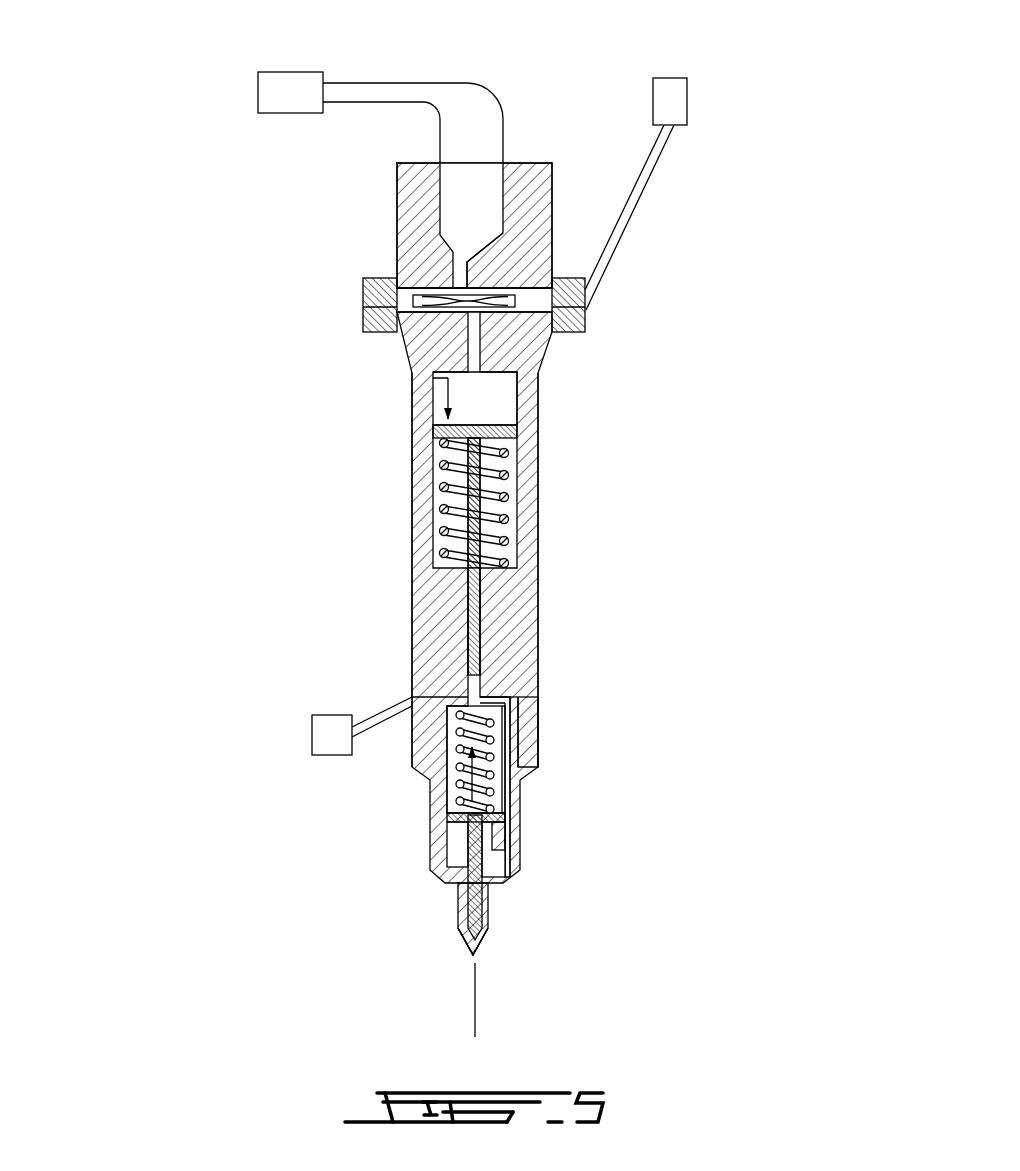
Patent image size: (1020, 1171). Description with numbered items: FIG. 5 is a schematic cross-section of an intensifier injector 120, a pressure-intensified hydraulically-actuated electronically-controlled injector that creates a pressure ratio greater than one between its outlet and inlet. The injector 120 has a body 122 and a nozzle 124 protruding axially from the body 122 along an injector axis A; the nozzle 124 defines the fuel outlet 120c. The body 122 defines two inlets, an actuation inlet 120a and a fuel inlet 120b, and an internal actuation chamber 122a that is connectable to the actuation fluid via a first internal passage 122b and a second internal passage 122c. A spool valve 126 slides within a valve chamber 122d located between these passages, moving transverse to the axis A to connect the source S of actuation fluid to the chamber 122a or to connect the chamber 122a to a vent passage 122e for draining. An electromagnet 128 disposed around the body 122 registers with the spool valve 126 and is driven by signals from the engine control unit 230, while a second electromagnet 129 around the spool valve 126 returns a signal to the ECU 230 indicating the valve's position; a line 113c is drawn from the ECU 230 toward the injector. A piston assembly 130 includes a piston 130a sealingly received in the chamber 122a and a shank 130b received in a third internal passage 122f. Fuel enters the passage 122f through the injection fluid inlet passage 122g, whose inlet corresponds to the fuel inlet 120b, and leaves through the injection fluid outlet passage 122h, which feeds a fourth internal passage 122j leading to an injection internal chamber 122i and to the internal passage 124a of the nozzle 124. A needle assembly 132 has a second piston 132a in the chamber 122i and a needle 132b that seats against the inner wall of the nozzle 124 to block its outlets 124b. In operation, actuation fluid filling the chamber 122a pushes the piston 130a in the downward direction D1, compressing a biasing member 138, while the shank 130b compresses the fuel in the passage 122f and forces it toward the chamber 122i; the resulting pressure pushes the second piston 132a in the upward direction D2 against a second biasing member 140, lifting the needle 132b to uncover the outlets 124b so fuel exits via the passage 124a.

The injector 120 is at (518, 150).
The actuation inlet 120a is at (469, 152).
The fuel inlet 120b is at (386, 673).
The fuel outlet 120c is at (489, 920).
The body 122 is at (518, 597).
The internal actuation chamber 122a is at (484, 396).
The first internal passage 122b is at (440, 197).
The second internal passage 122c is at (466, 350).
The valve chamber 122d is at (536, 289).
The vent passage 122e is at (533, 195).
The third internal passage 122f is at (483, 630).
The injection fluid inlet passage 122g is at (428, 700).
The injection fluid outlet passage 122h is at (522, 712).
The injection internal chamber 122i is at (462, 828).
The fourth internal passage 122j is at (510, 858).
The nozzle 124 is at (489, 900).
The internal passage 124a is at (489, 920).
The outlets 124b is at (461, 937).
The spool valve 126 is at (425, 303).
The electromagnet 128 is at (396, 290).
The second electromagnet 129 is at (570, 335).
The piston assembly 130 is at (503, 421).
The piston 130a is at (433, 430).
The shank 130b is at (506, 582).
The needle assembly 132 is at (518, 835).
The second piston 132a is at (487, 800).
The needle 132b is at (466, 897).
The biasing member 138 is at (440, 505).
The second biasing member 140 is at (494, 746).
The control line 113c is at (640, 208).
The engine control unit 230 is at (687, 103).
The source S is at (287, 115).
The downward direction D1 is at (433, 380).
The upward direction D2 is at (476, 775).
The injector axis A is at (475, 1000).